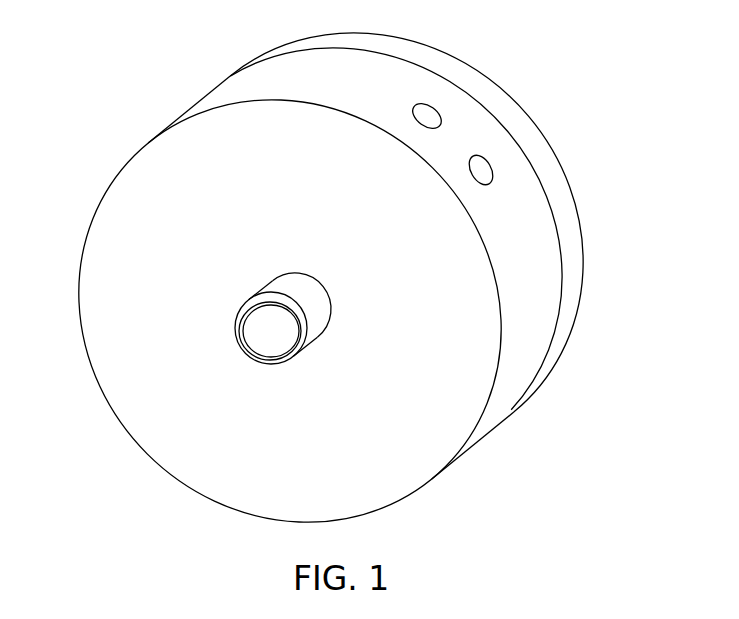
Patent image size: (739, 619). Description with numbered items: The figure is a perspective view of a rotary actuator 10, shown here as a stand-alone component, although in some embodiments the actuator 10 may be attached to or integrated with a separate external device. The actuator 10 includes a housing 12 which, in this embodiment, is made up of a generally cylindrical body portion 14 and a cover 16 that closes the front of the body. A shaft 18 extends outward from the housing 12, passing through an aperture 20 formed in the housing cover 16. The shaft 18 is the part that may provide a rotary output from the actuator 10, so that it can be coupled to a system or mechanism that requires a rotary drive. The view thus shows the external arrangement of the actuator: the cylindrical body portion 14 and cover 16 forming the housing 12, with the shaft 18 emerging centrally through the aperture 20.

The rotary actuator 10 is at (118, 78).
The housing 12 is at (543, 133).
The cylindrical body portion 14 is at (527, 265).
The cover 16 is at (152, 185).
The shaft 18 is at (262, 338).
The aperture 20 is at (330, 318).